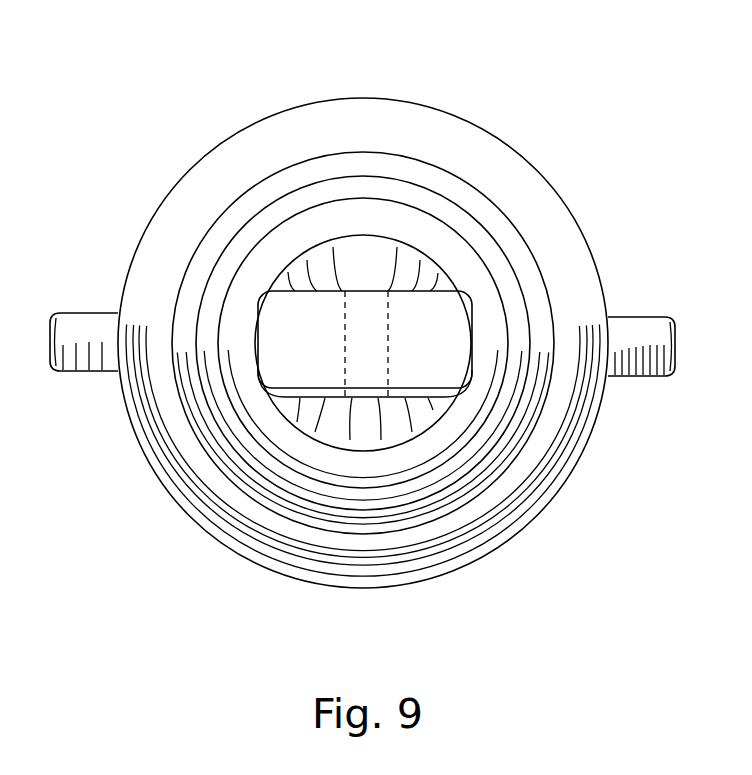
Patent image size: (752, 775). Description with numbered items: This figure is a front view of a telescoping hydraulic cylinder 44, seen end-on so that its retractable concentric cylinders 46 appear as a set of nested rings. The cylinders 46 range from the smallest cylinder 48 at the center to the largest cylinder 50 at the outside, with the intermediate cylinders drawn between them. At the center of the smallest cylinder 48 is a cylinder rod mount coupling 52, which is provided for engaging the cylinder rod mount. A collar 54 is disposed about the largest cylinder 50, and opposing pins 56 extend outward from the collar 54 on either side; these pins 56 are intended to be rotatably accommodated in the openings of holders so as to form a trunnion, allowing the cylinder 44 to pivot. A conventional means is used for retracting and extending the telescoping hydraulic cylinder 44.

The telescoping hydraulic cylinder 44 is at (508, 204).
The retractable concentric cylinders 46 is at (265, 148).
The smallest cylinder 48 is at (420, 232).
The largest cylinder 50 is at (409, 163).
The cylinder rod mount coupling 52 is at (290, 354).
The collar 54 is at (562, 243).
The opposing pins 56 is at (85, 372).